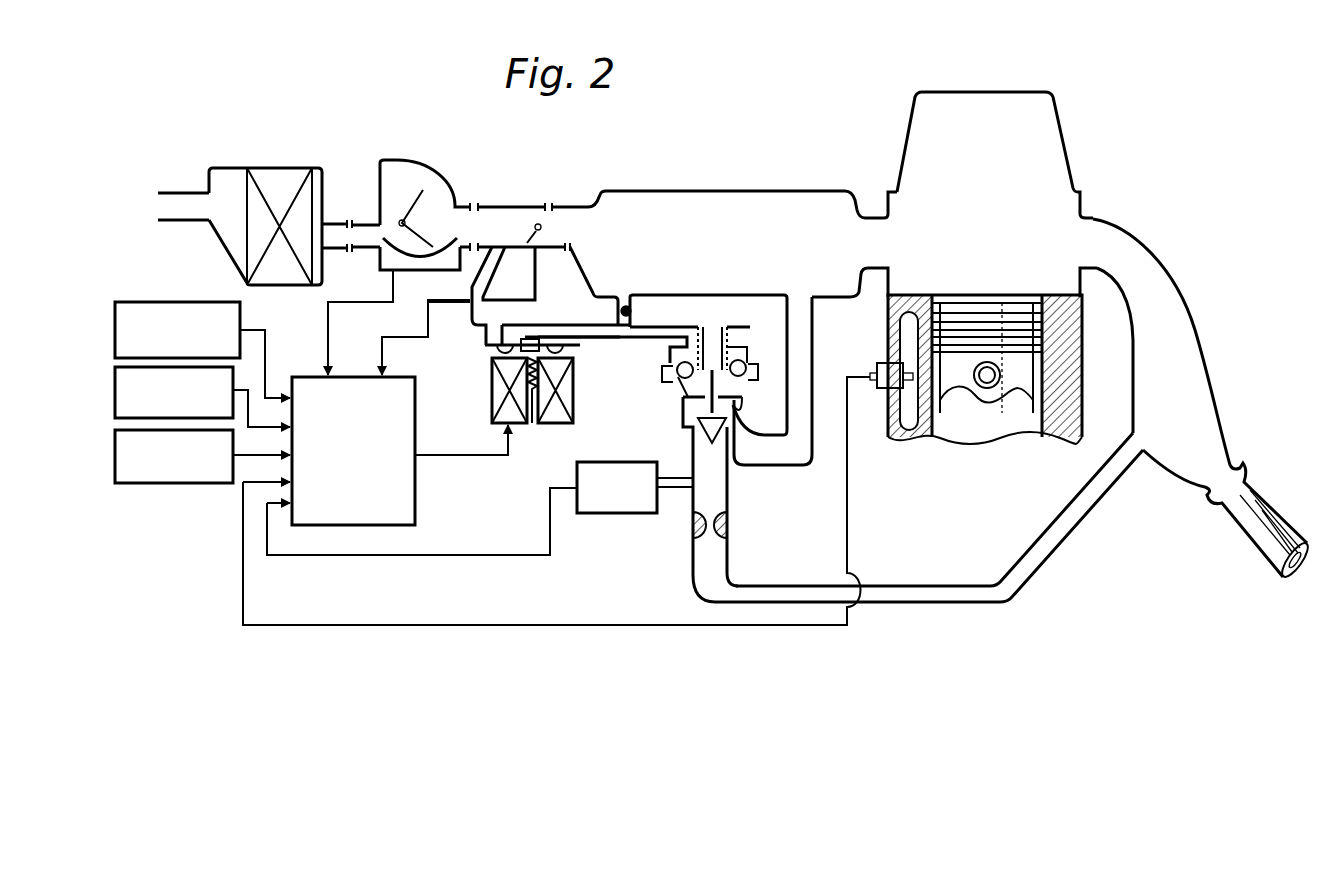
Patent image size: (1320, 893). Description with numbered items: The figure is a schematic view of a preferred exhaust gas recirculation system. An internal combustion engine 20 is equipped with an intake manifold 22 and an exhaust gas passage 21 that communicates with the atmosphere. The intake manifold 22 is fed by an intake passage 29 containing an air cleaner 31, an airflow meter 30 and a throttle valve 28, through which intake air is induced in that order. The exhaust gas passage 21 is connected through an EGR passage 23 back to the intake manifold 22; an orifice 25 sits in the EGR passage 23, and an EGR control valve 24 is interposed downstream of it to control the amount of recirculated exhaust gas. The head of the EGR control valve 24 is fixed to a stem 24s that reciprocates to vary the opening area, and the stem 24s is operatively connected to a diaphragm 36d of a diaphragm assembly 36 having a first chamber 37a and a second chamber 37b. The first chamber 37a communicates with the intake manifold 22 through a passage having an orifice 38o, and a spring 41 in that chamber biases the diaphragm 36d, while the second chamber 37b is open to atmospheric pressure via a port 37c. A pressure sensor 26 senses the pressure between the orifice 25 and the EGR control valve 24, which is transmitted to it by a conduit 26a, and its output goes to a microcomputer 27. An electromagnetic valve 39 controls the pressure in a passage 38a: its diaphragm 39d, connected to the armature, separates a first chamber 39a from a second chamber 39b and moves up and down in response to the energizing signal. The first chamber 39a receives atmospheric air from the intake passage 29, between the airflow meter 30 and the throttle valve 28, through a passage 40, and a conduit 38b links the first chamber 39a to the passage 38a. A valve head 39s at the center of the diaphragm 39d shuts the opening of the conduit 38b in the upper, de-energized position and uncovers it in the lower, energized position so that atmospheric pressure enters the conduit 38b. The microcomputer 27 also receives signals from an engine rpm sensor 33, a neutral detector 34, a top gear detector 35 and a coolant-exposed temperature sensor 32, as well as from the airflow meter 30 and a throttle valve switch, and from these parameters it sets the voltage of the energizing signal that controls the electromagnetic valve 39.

The internal combustion engine 20 is at (992, 243).
The exhaust gas passage 21 is at (1202, 399).
The intake manifold 22 is at (758, 217).
The EGR passage 23 is at (929, 547).
The EGR control valve 24 is at (716, 449).
The stem 24s is at (753, 433).
The orifice 25 is at (738, 527).
The pressure sensor 26 is at (617, 517).
The conduit 26a is at (671, 511).
The microcomputer 27 is at (381, 451).
The throttle valve 28 is at (556, 190).
The intake passage 29 is at (540, 238).
The airflow meter 30 is at (420, 189).
The air cleaner 31 is at (269, 201).
The temperature sensor 32 is at (888, 423).
The engine rpm sensor 33 is at (177, 309).
The neutral detector 34 is at (210, 380).
The top gear detector 35 is at (174, 475).
The diaphragm assembly 36 is at (685, 363).
The diaphragm 36d is at (675, 384).
The first chamber 37a is at (739, 335).
The second chamber 37b is at (682, 402).
The port 37c is at (760, 404).
The passage 38a is at (702, 335).
The conduit 38b is at (579, 359).
The orifice 38o is at (704, 365).
The electromagnetic valve 39 is at (503, 390).
The first chamber 39a is at (509, 296).
The second chamber 39b is at (507, 362).
The diaphragm 39d is at (594, 326).
The valve head 39s is at (549, 412).
The passage 40 is at (453, 304).
The spring 41 is at (754, 347).